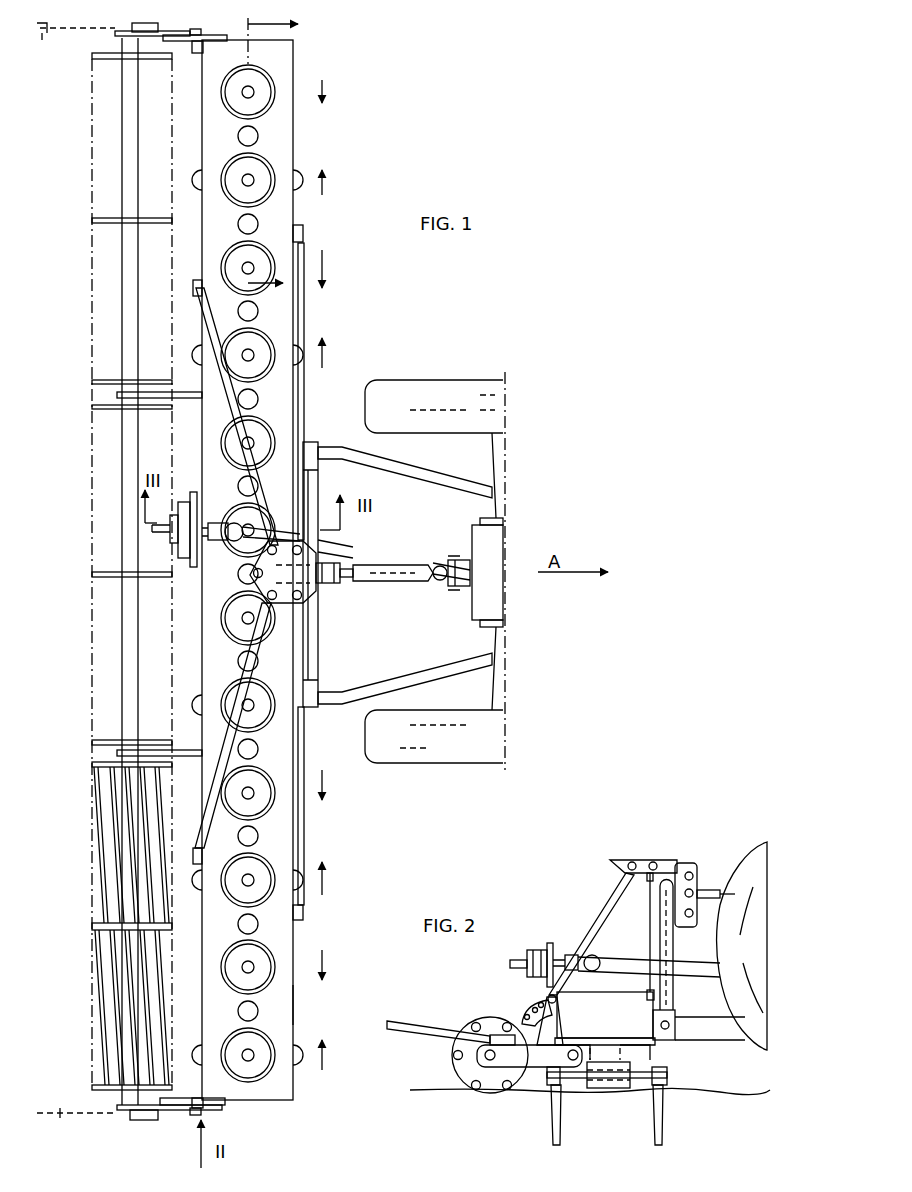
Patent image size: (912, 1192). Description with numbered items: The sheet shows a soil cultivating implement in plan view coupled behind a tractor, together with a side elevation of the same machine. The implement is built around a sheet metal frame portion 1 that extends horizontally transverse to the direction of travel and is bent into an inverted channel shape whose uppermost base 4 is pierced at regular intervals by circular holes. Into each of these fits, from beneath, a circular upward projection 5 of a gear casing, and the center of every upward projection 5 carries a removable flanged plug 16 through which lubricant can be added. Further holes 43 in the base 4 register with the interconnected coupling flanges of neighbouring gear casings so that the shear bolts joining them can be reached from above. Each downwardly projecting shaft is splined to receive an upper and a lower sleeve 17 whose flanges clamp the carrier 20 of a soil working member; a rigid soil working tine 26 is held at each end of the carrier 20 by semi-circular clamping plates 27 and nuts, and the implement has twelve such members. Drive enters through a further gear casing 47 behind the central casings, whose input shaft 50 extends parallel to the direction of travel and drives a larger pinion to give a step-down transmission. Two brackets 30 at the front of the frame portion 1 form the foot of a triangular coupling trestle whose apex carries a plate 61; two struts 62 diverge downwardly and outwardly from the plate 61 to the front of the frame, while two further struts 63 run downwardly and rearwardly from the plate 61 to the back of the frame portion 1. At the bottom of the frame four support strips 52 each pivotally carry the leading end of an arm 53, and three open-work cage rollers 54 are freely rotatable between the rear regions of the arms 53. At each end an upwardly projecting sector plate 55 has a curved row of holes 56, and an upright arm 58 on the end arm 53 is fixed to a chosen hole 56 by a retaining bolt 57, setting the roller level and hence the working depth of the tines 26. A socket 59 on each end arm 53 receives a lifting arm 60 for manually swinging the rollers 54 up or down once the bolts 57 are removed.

In FIG. 1, the frame portion 1 is at (298, 149).
In FIG. 1, the uppermost base 4 is at (290, 1003).
In FIG. 1, the upward projection 5 is at (261, 104).
In FIG. 1, the flanged plug 16 is at (245, 98).
In FIG. 2, the sleeve 17 is at (617, 990).
In FIG. 2, the carrier 20 is at (672, 1075).
In FIG. 2, the soil working tine 26 is at (561, 1128).
In FIG. 1, the clamping plate 27 is at (300, 1064).
In FIG. 1, the bracket 30 is at (318, 692).
In FIG. 2, the bracket 30 is at (678, 1013).
In FIG. 1, the holes 43 is at (258, 222).
In FIG. 1, the further gear casing 47 is at (184, 500).
In FIG. 2, the further gear casing 47 is at (540, 947).
In FIG. 1, the shaft 50 is at (207, 540).
In FIG. 2, the shaft 50 is at (565, 957).
In FIG. 2, the support strip 52 is at (635, 1058).
In FIG. 1, the arm 53 is at (117, 36).
In FIG. 2, the arm 53 is at (538, 1068).
In FIG. 1, the open-work ground roller 54 is at (92, 306).
In FIG. 2, the open-work ground roller 54 is at (452, 1072).
In FIG. 1, the sector plate 55 is at (203, 50).
In FIG. 2, the sector plate 55 is at (530, 1013).
In FIG. 2, the holes 56 is at (535, 1002).
In FIG. 1, the retaining bolt 57 is at (199, 29).
In FIG. 2, the retaining bolt 57 is at (557, 1010).
In FIG. 1, the upright arm 58 is at (220, 36).
In FIG. 2, the upright arm 58 is at (562, 1031).
In FIG. 1, the socket 59 is at (148, 23).
In FIG. 2, the socket 59 is at (494, 1034).
In FIG. 1, the lifting arm 60 is at (77, 570).
In FIG. 2, the lifting arm 60 is at (422, 1027).
In FIG. 1, the plate 61 is at (315, 600).
In FIG. 2, the plate 61 is at (665, 858).
In FIG. 1, the strut 62 is at (303, 327).
In FIG. 2, the strut 62 is at (658, 923).
In FIG. 1, the strut 63 is at (222, 403).
In FIG. 2, the strut 63 is at (610, 898).